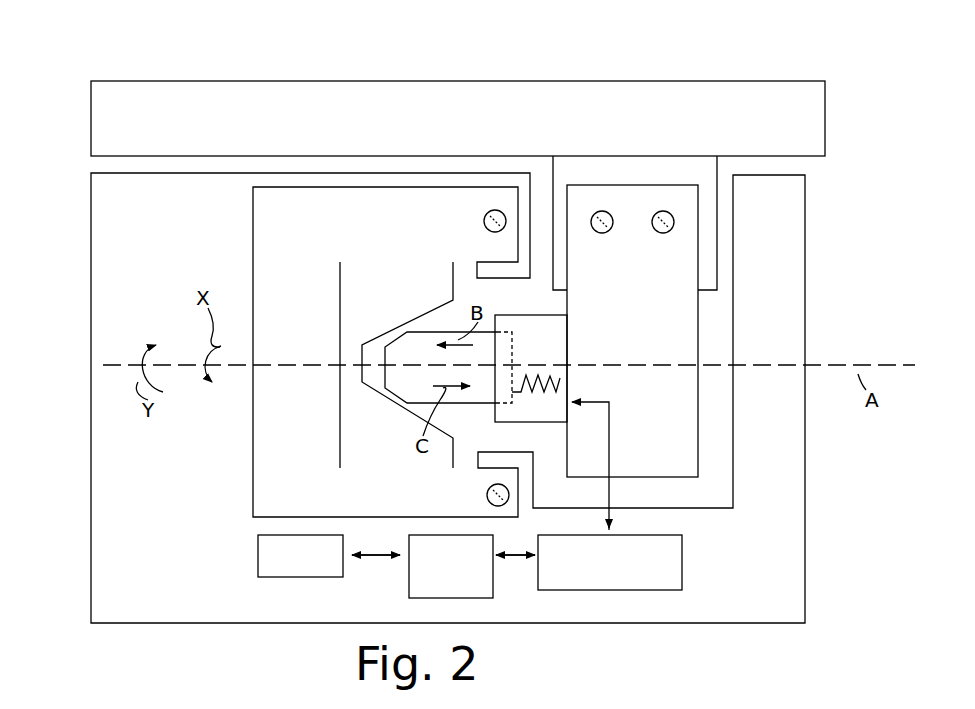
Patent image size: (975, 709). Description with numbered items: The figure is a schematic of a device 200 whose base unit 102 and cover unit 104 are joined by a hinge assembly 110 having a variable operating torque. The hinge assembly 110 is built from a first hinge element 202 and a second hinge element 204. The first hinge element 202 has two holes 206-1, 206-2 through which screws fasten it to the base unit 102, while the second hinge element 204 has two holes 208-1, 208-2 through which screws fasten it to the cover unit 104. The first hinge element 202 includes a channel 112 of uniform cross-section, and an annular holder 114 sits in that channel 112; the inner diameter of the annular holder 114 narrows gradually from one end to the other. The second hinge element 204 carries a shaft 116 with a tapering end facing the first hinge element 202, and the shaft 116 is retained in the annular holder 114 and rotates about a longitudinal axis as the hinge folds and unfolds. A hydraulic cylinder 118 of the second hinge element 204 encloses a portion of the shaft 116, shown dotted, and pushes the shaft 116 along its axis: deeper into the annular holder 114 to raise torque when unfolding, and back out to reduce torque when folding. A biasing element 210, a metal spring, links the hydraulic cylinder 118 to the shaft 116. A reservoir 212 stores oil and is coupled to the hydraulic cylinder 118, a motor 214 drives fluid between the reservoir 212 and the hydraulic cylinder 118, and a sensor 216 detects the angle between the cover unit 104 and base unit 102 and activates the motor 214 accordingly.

The device 200 is at (138, 60).
The cover unit 104 is at (803, 112).
The base unit 102 is at (102, 322).
The hinge assembly 110 is at (235, 244).
The channel 112 is at (467, 290).
The annular holder 114 is at (412, 280).
The shaft 116 is at (403, 380).
The hydraulic cylinder 118 is at (550, 340).
The first hinge element 202 is at (258, 468).
The second hinge element 204 is at (683, 263).
The hole 206-1 is at (496, 211).
The hole 206-2 is at (487, 495).
The hole 208-1 is at (599, 211).
The hole 208-2 is at (664, 211).
The biasing element 210 is at (560, 378).
The reservoir 212 is at (610, 496).
The motor 214 is at (451, 566).
The sensor 216 is at (300, 556).